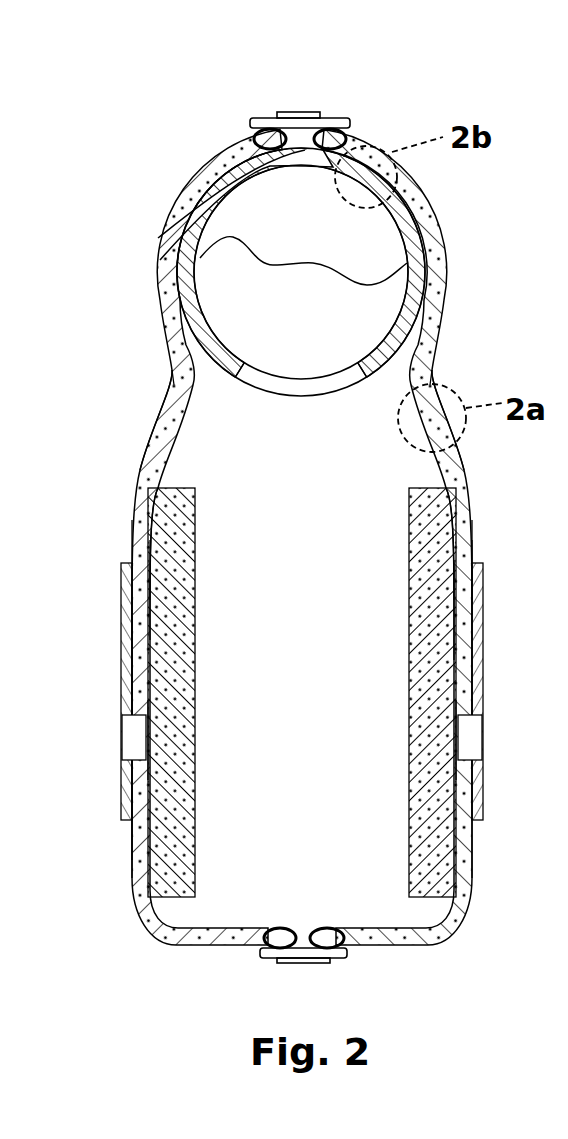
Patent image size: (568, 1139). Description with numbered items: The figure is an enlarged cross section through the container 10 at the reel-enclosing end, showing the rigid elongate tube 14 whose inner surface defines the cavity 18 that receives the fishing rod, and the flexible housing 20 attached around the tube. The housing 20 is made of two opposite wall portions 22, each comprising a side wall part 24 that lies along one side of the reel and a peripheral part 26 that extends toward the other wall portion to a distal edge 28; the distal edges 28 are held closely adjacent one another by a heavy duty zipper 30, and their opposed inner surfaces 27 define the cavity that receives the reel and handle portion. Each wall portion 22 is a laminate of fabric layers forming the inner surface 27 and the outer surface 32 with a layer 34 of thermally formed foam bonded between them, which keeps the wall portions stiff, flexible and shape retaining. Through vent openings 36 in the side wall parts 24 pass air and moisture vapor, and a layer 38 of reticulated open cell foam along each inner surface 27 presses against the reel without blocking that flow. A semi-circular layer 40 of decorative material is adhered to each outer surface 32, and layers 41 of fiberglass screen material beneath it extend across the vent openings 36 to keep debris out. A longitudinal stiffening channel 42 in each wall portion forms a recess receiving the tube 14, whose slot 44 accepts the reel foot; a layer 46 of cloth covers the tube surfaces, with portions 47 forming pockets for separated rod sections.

The container 10 is at (148, 165).
The rigid elongate tube 14 is at (393, 210).
The cavity 18 is at (316, 272).
The flexible housing 20 is at (479, 517).
The wall portions 22 is at (133, 500).
The side wall parts 24 is at (137, 847).
The peripheral parts 26 is at (240, 132).
The inner surfaces 27 is at (160, 455).
The distal edges 28 is at (292, 125).
The heavy duty zipper 30 is at (312, 117).
The outer surfaces 32 is at (152, 433).
The layer of thermally formed foam 34 is at (131, 552).
The vent openings 36 is at (145, 743).
The layer of reticulated open cell foam 38 is at (187, 790).
The layer of decorative material 40 is at (123, 623).
The layers of fiberglass screen material 41 is at (140, 742).
The longitudinal stiffening channel 42 is at (172, 375).
The slot 44 is at (323, 388).
The layer of cloth 46 is at (303, 166).
The portions 47 is at (282, 262).